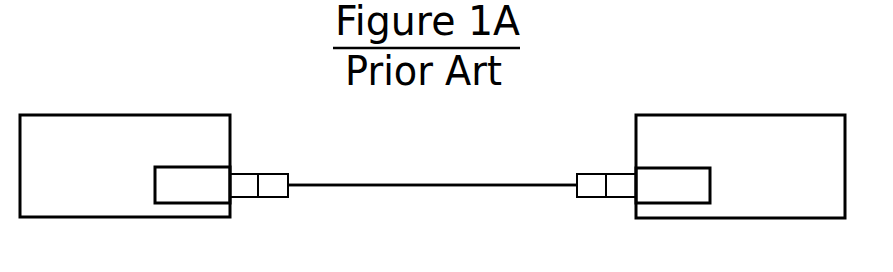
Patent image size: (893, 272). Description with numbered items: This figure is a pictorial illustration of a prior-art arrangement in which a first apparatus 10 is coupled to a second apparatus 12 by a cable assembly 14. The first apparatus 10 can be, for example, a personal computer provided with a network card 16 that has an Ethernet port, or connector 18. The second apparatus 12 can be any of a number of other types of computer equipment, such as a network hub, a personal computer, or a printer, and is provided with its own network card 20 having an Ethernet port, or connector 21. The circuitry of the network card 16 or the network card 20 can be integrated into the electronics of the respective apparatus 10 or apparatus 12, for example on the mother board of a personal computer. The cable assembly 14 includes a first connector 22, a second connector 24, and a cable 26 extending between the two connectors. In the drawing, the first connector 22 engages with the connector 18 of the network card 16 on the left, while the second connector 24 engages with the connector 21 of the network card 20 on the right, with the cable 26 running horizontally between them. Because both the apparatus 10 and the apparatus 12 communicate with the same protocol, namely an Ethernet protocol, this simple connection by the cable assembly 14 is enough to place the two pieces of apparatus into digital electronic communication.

The first apparatus 10 is at (77, 219).
The second apparatus 12 is at (768, 219).
The cable assembly 14 is at (350, 176).
The network card 16 is at (178, 204).
The Ethernet port (connector) 18 is at (243, 198).
The network card 20 is at (690, 204).
The Ethernet port (connector) 21 is at (617, 198).
The first connector 22 is at (270, 198).
The second connector 24 is at (590, 198).
The cable 26 is at (422, 187).